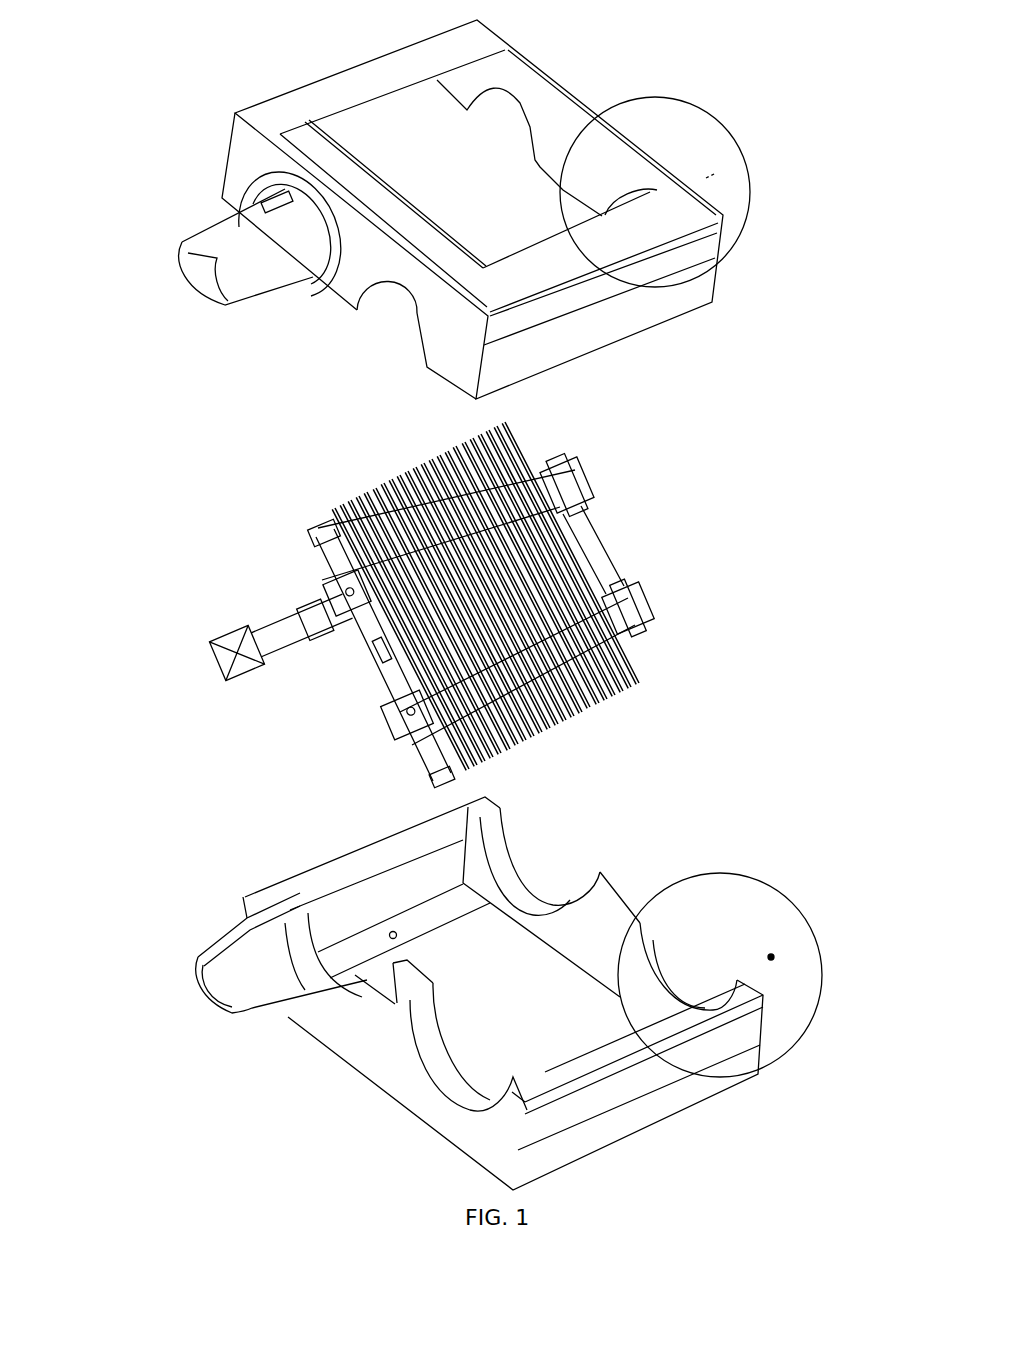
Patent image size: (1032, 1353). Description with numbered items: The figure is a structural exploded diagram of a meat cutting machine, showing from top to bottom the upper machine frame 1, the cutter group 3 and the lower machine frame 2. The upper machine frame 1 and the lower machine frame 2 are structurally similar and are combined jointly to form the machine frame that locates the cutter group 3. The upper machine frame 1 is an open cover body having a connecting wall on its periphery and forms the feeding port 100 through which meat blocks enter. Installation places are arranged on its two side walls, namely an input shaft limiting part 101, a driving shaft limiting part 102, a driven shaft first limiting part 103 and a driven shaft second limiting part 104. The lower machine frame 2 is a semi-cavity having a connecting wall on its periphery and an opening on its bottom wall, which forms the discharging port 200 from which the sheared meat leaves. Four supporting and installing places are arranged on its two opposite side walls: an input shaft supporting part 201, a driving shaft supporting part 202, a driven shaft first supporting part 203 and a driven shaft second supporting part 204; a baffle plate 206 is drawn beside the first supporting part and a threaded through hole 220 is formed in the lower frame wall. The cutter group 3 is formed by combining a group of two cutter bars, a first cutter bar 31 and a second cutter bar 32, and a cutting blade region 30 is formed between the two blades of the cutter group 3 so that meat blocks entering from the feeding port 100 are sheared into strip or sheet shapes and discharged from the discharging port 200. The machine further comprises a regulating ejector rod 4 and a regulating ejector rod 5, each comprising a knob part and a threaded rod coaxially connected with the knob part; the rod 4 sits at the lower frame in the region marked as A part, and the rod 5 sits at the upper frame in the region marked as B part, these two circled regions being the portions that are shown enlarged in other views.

The upper machine frame 1 is at (469, 204).
The feeding port 100 is at (403, 128).
The input shaft limiting part 101 is at (185, 266).
The driving shaft limiting part 102 is at (522, 98).
The driven shaft first limiting part 103 is at (405, 303).
The driven shaft second limiting part 104 is at (627, 186).
The regulating ejector rod 5 is at (715, 174).
The B part B is at (747, 230).
The cutter group 3 is at (383, 618).
The cutting blade region 30 is at (592, 540).
The first cutter bar 31 is at (318, 582).
The second cutter bar 32 is at (390, 727).
The lower machine frame 2 is at (483, 990).
The discharging port 200 is at (560, 1028).
The input shaft supporting part 201 is at (222, 990).
The driving shaft supporting part 202 is at (541, 852).
The driven shaft first supporting part 203 is at (433, 1104).
The driven shaft second supporting part 204 is at (656, 934).
The baffle plate 206 is at (423, 1018).
The threaded through hole 220 is at (390, 932).
The A part A is at (716, 964).
The regulating ejector rod 4 is at (774, 956).